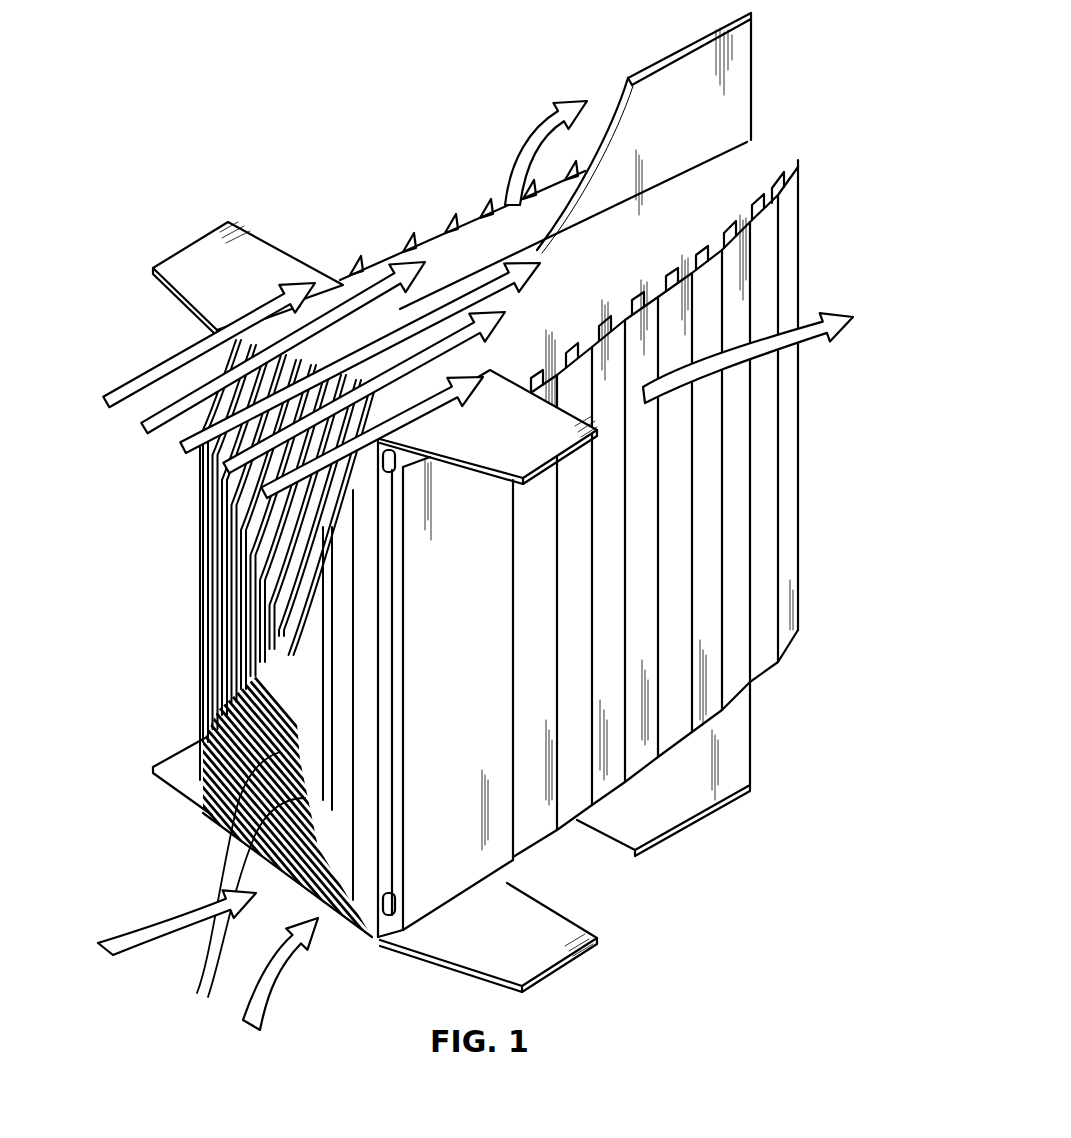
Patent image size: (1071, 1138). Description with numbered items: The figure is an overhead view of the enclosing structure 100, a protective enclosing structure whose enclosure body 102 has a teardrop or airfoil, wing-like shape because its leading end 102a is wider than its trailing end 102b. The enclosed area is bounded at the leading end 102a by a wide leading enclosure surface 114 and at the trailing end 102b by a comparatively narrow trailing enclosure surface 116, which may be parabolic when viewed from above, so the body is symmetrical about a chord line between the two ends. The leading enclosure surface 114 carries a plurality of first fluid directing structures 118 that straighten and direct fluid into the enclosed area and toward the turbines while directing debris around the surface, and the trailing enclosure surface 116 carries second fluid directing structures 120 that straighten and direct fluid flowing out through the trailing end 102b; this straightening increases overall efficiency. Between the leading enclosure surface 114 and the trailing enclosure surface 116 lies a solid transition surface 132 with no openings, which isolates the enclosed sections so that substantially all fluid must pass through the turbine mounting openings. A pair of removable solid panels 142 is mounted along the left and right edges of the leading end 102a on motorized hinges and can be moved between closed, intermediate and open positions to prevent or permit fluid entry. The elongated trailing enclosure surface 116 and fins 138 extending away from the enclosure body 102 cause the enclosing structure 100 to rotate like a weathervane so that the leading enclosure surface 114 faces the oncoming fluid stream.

The enclosure structure 100 is at (180, 49).
The enclosure body 102 is at (433, 228).
The leading end 102a is at (182, 672).
The trailing end 102b is at (773, 236).
The leading enclosure surface 114 is at (235, 578).
The trailing enclosure surface 116 is at (760, 565).
The first fluid directing structures 118 is at (198, 994).
The second fluid directing structures 120 is at (690, 650).
The solid transition surface 132 is at (382, 540).
The fins 138 is at (668, 85).
The removable solid panels 142 is at (490, 808).